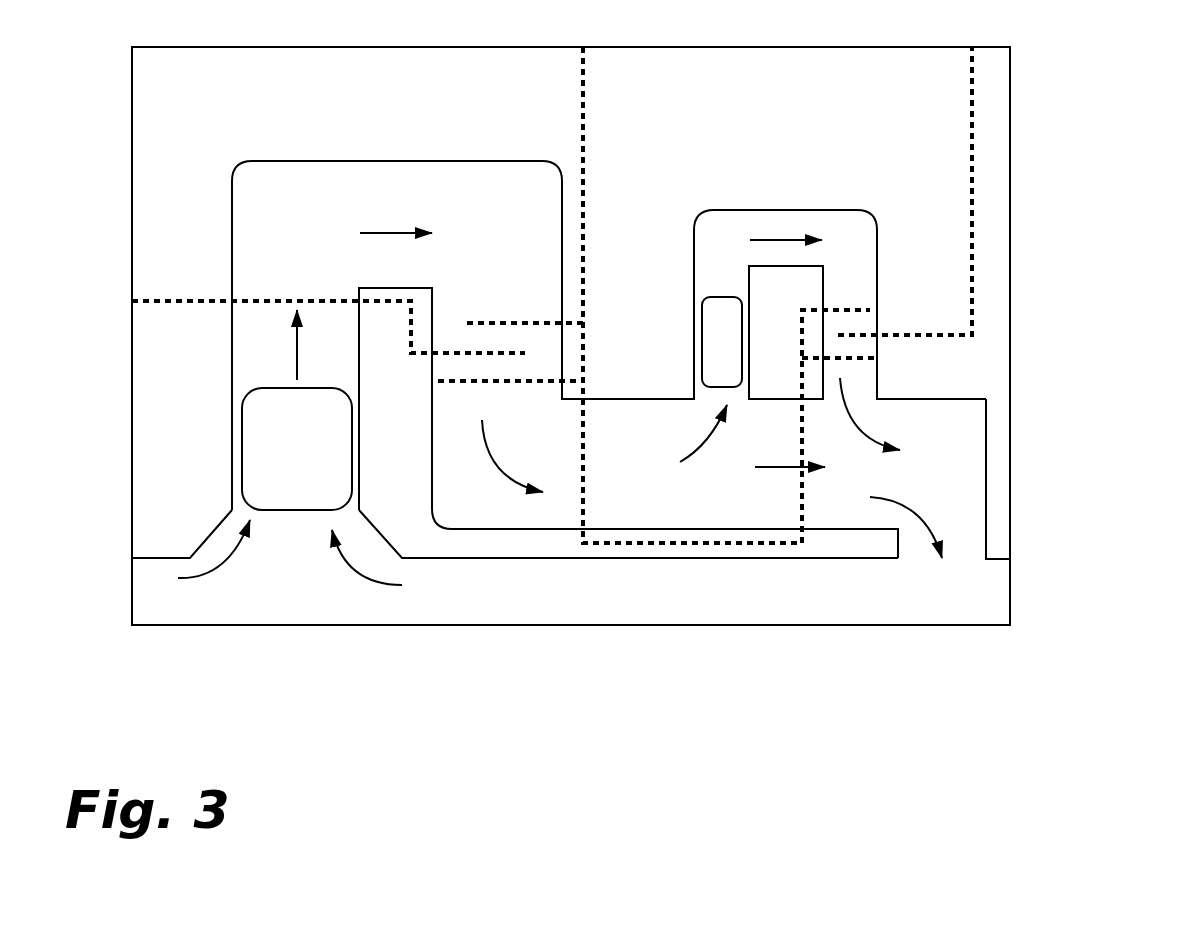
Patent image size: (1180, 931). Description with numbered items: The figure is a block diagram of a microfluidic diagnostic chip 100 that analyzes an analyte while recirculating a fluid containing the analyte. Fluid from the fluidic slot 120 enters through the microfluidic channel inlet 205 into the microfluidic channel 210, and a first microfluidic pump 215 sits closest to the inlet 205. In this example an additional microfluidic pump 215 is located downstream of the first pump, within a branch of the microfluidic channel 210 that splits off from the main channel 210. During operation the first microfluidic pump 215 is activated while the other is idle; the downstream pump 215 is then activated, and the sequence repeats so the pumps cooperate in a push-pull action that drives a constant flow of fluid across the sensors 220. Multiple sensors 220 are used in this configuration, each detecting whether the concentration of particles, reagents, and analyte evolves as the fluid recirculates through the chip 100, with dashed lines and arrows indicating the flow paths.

The microfluidic diagnostic chip 100 is at (1077, 608).
The fluidic slot 120 is at (554, 603).
The microfluidic channel inlet 205 is at (283, 545).
The microfluidic channel 210 is at (267, 187).
The microfluidic pump 215 is at (275, 425).
The sensor 220 is at (484, 303).